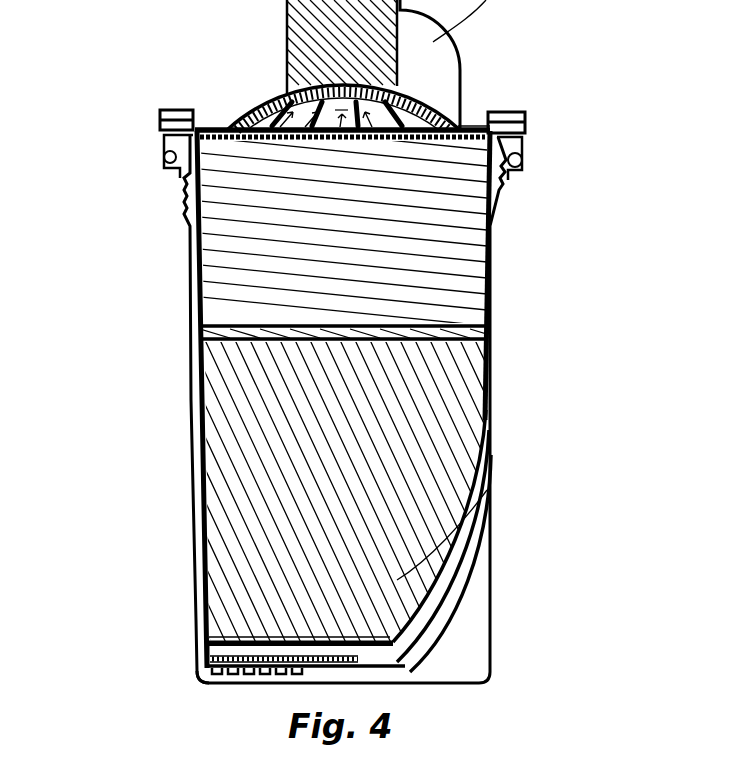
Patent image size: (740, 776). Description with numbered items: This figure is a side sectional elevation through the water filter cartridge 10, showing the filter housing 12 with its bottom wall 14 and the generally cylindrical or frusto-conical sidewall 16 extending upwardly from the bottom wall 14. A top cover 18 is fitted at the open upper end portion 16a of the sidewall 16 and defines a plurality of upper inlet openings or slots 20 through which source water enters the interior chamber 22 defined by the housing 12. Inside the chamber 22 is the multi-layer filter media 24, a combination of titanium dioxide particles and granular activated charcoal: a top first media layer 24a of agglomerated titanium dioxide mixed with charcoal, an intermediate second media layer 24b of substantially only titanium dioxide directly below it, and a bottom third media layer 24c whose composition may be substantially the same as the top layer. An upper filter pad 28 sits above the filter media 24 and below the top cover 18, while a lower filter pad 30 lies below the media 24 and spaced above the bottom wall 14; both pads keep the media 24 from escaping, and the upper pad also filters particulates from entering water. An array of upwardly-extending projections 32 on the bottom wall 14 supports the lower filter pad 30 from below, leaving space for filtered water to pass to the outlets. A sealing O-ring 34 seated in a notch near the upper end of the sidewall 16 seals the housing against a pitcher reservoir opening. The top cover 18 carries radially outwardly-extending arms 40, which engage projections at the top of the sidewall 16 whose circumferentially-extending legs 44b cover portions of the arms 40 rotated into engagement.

The water filter cartridge 10 is at (606, 46).
The filter housing 12 is at (180, 407).
The bottom wall 14 is at (216, 683).
The sidewall 16 is at (192, 506).
The open upper end portion 16a is at (484, 626).
The top cover 18 is at (262, 100).
The upper inlet openings or slots 20 is at (290, 120).
The interior chamber 22 is at (213, 467).
The multi-layer filter media 24 is at (227, 382).
The first media layer 24a is at (505, 229).
The second media layer 24b is at (492, 328).
The third media layer 24c is at (470, 493).
The upper filter pad 28 is at (344, 135).
The lower filter pad 30 is at (242, 641).
The projections 32 is at (286, 672).
The sealing O-ring 34 is at (164, 157).
The radially outwardly-extending arms 40 is at (481, 126).
The circumferentially-extending legs 44b is at (171, 112).